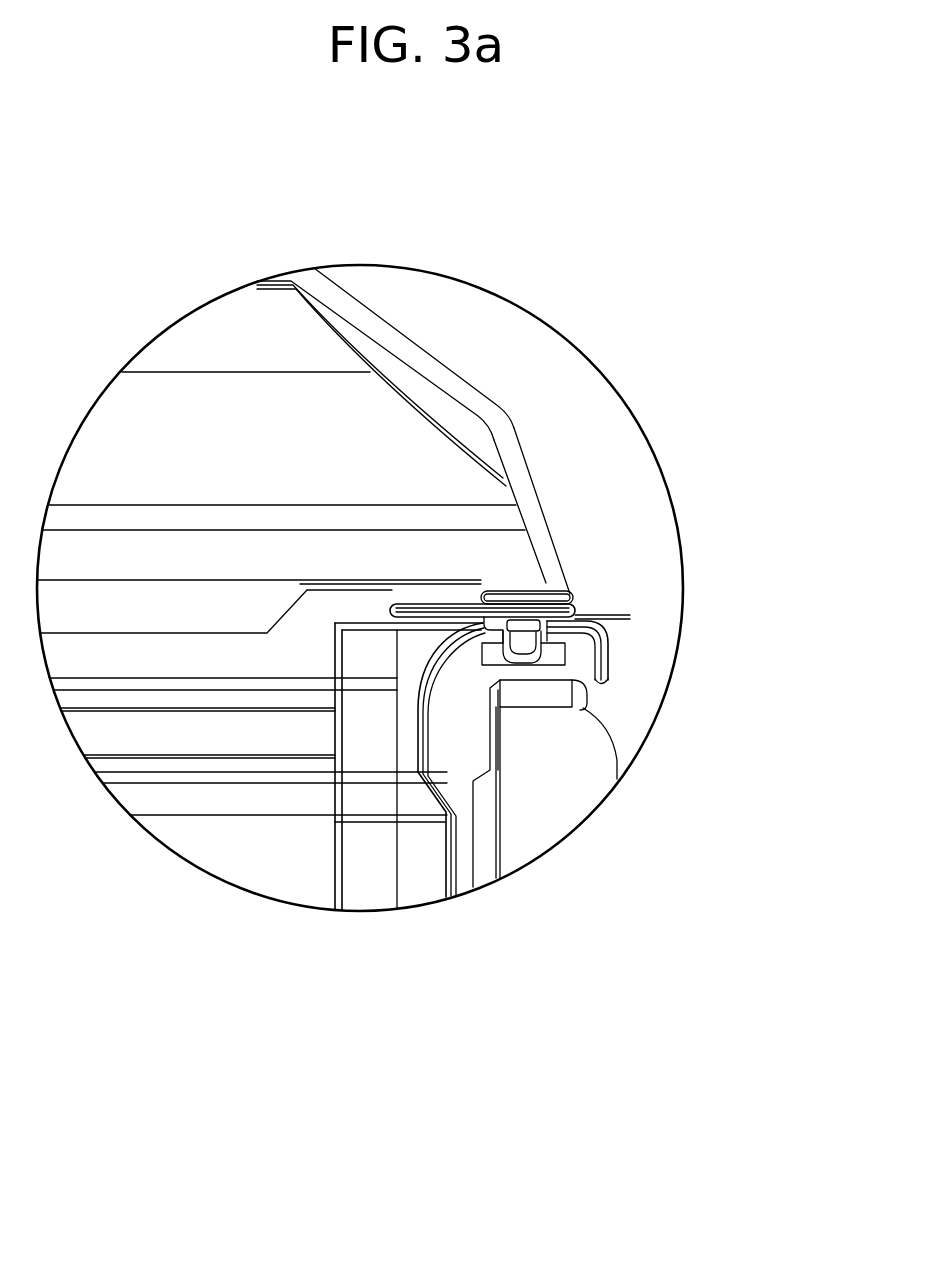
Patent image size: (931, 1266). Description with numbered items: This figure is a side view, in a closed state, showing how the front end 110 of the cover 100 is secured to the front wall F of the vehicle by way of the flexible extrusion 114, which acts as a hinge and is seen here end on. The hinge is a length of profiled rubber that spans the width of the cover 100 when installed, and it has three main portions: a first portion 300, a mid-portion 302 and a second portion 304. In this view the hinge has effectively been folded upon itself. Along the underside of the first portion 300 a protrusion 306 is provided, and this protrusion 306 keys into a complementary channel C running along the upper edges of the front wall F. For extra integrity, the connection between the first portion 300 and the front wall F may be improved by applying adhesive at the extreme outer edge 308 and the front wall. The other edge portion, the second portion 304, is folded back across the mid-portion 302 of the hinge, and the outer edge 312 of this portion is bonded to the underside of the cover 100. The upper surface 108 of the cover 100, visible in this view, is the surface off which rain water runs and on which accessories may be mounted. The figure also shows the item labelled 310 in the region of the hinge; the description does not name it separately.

The cover 100 is at (422, 411).
The upper surface 108 is at (366, 309).
The front end 110 is at (518, 482).
The flexible extrusion 114 is at (418, 596).
The first portion 300 is at (598, 625).
The mid-portion 302 is at (445, 607).
The second portion 304 is at (505, 604).
The protrusion 306 is at (522, 663).
The extreme outer edge 308 is at (606, 667).
The adhesive strip 310 is at (512, 596).
The outer edge 312 is at (398, 617).
The channel C is at (555, 653).
The front wall F is at (563, 748).